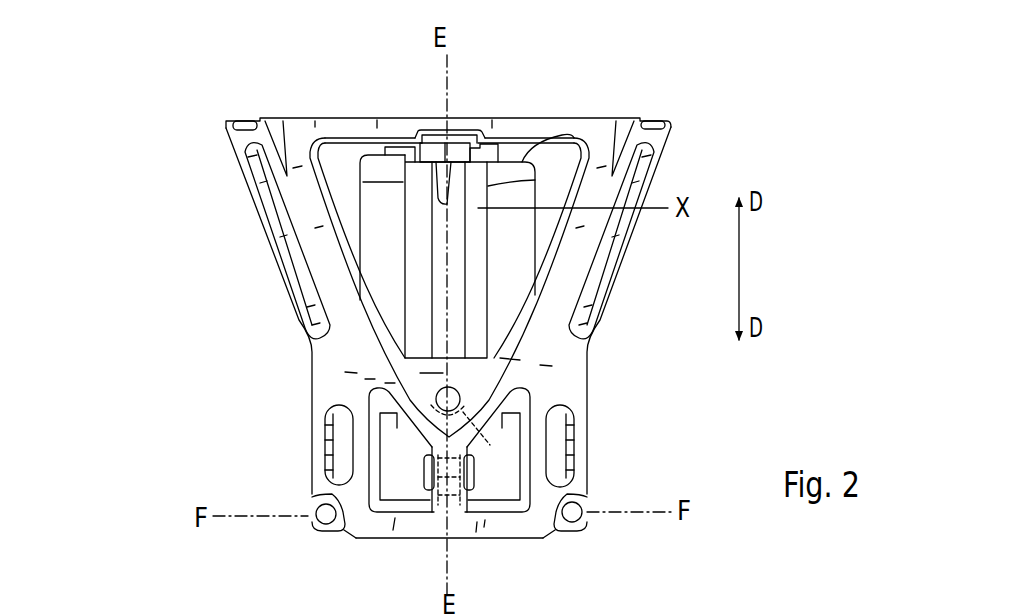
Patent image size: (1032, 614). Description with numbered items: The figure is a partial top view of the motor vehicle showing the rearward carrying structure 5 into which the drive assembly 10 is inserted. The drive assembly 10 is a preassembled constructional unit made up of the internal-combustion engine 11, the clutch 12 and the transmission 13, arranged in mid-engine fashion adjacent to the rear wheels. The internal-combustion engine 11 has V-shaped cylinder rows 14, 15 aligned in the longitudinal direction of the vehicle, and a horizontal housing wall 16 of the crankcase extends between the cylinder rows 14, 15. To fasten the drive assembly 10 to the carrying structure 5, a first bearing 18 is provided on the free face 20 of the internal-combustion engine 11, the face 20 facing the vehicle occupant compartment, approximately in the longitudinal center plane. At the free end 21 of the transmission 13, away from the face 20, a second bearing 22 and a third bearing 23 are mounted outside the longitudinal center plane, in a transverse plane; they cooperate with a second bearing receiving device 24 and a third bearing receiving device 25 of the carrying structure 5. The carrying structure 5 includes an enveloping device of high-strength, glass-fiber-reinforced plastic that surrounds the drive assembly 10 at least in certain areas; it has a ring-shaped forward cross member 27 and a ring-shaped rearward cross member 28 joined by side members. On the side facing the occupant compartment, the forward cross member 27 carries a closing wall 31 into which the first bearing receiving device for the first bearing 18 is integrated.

The rearward carrying structure 5 is at (591, 404).
The drive assembly 10 is at (362, 262).
The internal-combustion engine 11 is at (525, 167).
The clutch 12 is at (434, 410).
The transmission 13 is at (502, 485).
The cylinder row 14 is at (373, 160).
The cylinder row 15 is at (502, 165).
The horizontal housing wall 16 is at (450, 187).
The first bearing 18 is at (437, 130).
The free face 20 is at (410, 132).
The free end 21 is at (421, 505).
The second bearing 22 is at (311, 527).
The third bearing 23 is at (586, 522).
The second bearing receiving device 24 is at (342, 535).
The third bearing receiving device 25 is at (558, 534).
The forward cross member 27 is at (275, 119).
The rearward cross member 28 is at (477, 522).
The closing wall 31 is at (550, 120).